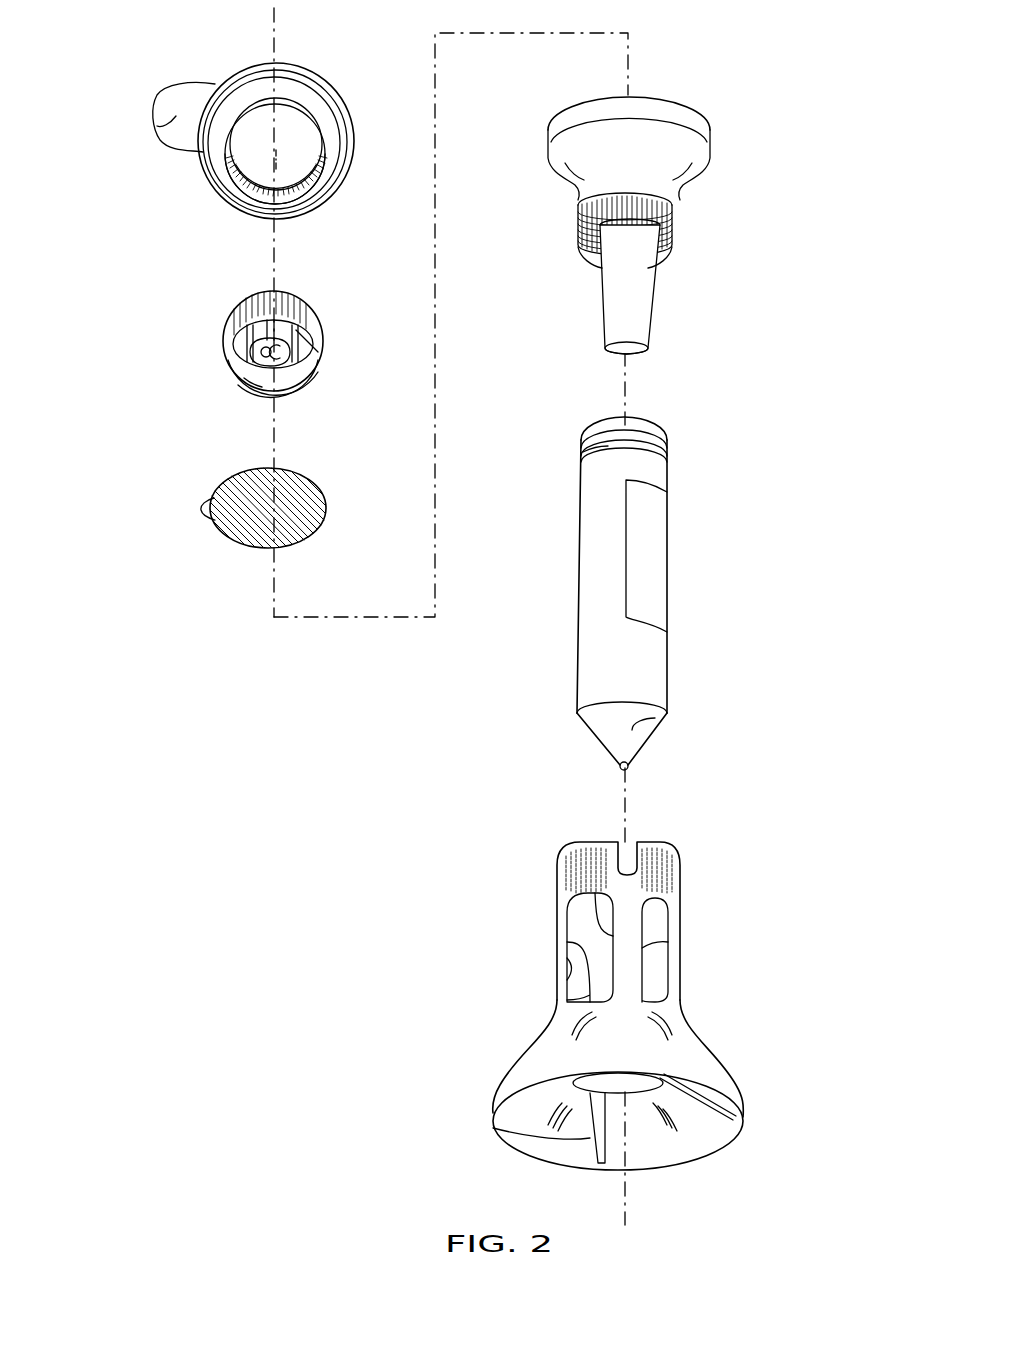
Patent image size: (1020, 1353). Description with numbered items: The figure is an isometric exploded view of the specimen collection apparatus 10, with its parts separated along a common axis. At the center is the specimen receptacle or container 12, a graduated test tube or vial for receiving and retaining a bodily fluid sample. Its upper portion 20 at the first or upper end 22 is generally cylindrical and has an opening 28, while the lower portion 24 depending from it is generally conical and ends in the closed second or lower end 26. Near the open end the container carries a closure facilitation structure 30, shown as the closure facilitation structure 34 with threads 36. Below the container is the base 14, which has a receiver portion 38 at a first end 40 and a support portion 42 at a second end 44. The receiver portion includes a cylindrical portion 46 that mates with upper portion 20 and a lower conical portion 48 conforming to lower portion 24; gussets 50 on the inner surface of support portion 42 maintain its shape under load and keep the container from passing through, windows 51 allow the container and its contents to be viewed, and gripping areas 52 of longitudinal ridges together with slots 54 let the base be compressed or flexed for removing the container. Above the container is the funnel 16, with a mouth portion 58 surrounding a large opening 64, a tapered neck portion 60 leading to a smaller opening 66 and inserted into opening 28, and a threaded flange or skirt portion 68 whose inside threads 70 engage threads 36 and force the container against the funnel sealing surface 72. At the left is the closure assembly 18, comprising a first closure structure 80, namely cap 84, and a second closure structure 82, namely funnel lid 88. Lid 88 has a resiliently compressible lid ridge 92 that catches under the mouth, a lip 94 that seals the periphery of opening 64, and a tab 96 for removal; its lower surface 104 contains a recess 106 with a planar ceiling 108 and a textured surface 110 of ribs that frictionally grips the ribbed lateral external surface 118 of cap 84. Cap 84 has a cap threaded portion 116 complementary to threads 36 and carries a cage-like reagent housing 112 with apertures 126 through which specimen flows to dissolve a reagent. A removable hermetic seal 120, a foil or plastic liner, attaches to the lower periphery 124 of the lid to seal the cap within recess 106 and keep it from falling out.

The specimen collection apparatus 10 is at (325, 838).
The container 12 is at (631, 571).
The base 14 is at (643, 1013).
The funnel 16 is at (688, 198).
The closure assembly 18 is at (212, 413).
The upper portion 20 is at (660, 658).
The upper end 22 is at (639, 443).
The lower portion 24 is at (621, 731).
The lower end 26 is at (550, 750).
The opening 28 is at (657, 422).
The closure facilitation structure 30 is at (697, 753).
The closure facilitation structure 34 is at (547, 428).
The threads 36 is at (582, 463).
The receiver portion 38 is at (682, 943).
The first end 40 is at (641, 904).
The support portion 42 is at (723, 1063).
The second end 44 is at (639, 1146).
The cylindrical portion 46 is at (560, 908).
The lower conical portion 48 is at (637, 1095).
The gussets 50 is at (493, 1128).
The windows 51 is at (573, 980).
The gripping areas 52 is at (665, 870).
The slots 54 is at (630, 847).
The mouth portion 58 is at (696, 150).
The neck portion 60 is at (620, 306).
The large opening 64 is at (649, 198).
The smaller opening 66 is at (640, 347).
The threaded flange or skirt portion 68 is at (680, 220).
The threads 70 is at (673, 253).
The funnel sealing surface 72 is at (580, 237).
The first closure structure 80 is at (246, 352).
The second closure structure 82 is at (257, 126).
The cap 84 is at (247, 352).
The funnel lid 88 is at (257, 126).
The lid ridge 92 is at (297, 62).
The lip 94 is at (323, 70).
The tab 96 is at (173, 115).
The lower surface 104 is at (338, 167).
The recess 106 is at (247, 157).
The ceiling 108 is at (294, 142).
The textured surface 110 is at (298, 187).
The reagent housing 112 is at (320, 370).
The cap threaded portion 116 is at (240, 382).
The lateral external surface 118 is at (313, 300).
The removable hermetic seal 120 is at (220, 527).
The lower periphery 124 is at (245, 197).
The apertures 126 is at (320, 348).